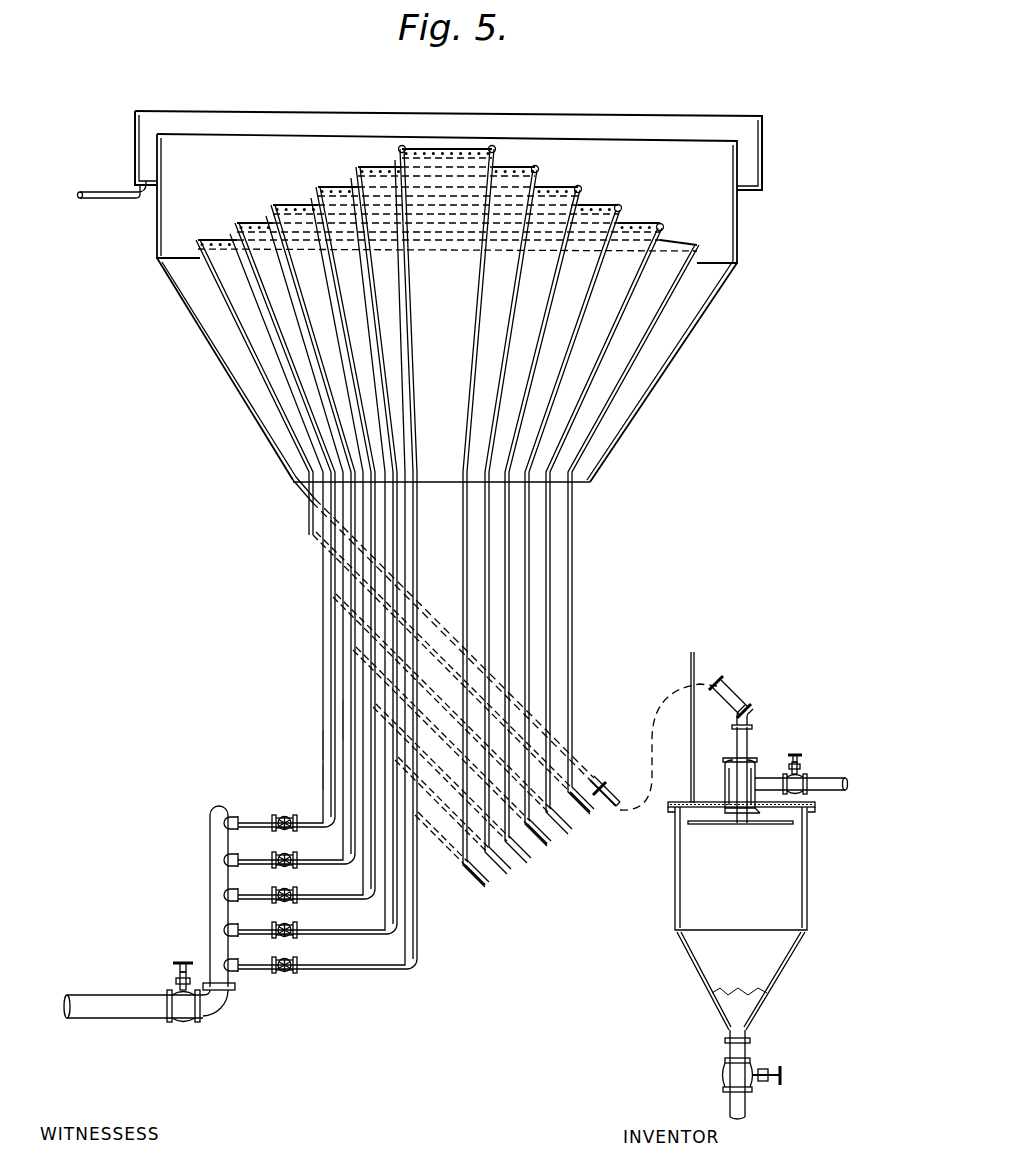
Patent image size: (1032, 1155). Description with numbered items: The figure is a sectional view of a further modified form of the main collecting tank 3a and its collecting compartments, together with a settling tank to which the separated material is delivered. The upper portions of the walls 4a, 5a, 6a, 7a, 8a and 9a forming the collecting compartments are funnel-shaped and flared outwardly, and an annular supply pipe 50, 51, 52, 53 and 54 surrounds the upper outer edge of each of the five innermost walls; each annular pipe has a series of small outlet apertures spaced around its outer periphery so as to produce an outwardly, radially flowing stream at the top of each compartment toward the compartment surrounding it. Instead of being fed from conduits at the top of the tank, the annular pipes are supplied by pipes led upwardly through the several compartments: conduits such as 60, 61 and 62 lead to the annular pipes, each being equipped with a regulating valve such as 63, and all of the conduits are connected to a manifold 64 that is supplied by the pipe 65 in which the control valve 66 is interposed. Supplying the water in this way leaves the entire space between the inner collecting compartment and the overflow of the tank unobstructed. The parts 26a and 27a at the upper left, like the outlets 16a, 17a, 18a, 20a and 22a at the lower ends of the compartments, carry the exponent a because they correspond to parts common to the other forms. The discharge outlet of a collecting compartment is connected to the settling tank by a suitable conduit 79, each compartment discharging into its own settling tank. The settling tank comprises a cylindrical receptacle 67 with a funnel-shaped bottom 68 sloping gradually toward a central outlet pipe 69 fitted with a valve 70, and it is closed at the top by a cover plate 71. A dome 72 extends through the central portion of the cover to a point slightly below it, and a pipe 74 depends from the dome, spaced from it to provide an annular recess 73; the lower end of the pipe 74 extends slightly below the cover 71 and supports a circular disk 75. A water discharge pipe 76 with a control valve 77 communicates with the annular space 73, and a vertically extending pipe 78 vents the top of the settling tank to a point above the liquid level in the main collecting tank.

The main collecting tank 3a is at (739, 218).
The screen tray 4a is at (383, 180).
The screen tray 5a is at (343, 197).
The screen tray 6a is at (300, 217).
The screen tray 7a is at (264, 237).
The screen tray 8a is at (219, 250).
The screen tray 9a is at (180, 270).
The discharge chute 16a is at (436, 632).
The discharge outlet 17a is at (590, 775).
The discharge outlet 18a is at (562, 802).
The discharge outlet 20a is at (530, 835).
The discharge outlet 22a is at (472, 866).
The outer casing 26a is at (137, 128).
The inlet pipe 27a is at (105, 198).
The annular supply pipe 50 is at (492, 146).
The annular supply pipe 51 is at (537, 166).
The annular supply pipe 52 is at (581, 187).
The annular supply pipe 53 is at (621, 206).
The annular supply pipe 54 is at (663, 226).
The conduit 60 is at (343, 720).
The conduit 61 is at (333, 745).
The conduit 62 is at (322, 780).
The regulating valve 63 is at (270, 815).
The manifold 64 is at (213, 872).
The pipe 65 is at (138, 1000).
The control valve 66 is at (192, 1018).
The cylindrical receptacle 67 is at (676, 868).
The funnel-shaped bottom 68 is at (692, 964).
The outlet pipe 69 is at (728, 1048).
The valve 70 is at (742, 1072).
The cover plate 71 is at (792, 806).
The dome 72 is at (729, 780).
The annular recess 73 is at (731, 790).
The pipe 74 is at (749, 772).
The circular disk 75 is at (748, 830).
The water discharge pipe 76 is at (833, 782).
The control valve 77 is at (797, 780).
The vertically extending pipe 78 is at (692, 700).
The conduit 79 is at (723, 688).